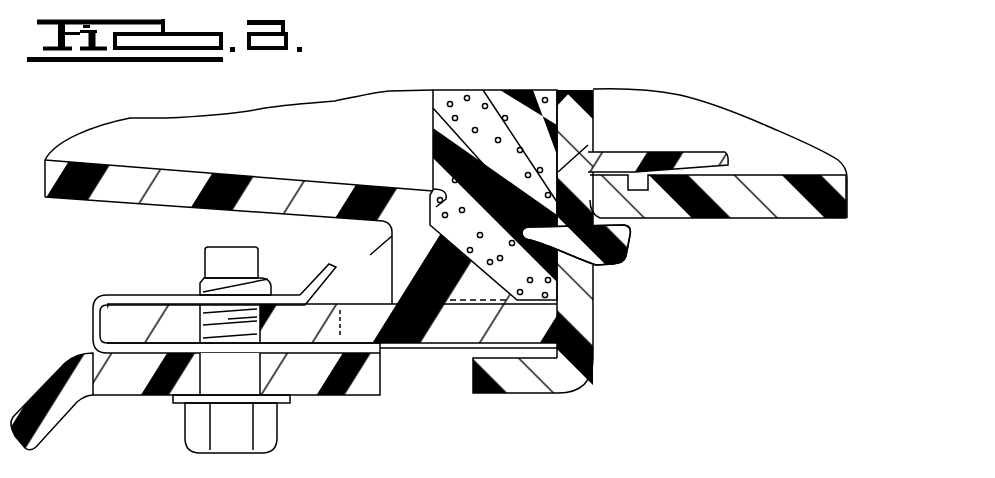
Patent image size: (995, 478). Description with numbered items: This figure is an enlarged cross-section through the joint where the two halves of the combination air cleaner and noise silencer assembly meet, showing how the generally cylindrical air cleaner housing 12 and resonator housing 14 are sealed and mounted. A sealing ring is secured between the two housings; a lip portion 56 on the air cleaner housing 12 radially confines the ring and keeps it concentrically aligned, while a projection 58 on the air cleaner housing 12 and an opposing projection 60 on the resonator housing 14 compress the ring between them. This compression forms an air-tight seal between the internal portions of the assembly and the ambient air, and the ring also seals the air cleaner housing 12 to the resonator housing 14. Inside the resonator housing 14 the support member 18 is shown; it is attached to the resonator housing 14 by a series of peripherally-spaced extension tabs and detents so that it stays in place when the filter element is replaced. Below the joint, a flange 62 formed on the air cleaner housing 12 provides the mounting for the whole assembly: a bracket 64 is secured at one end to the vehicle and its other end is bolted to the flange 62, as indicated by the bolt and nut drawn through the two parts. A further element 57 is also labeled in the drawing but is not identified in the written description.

The air cleaner housing 12 is at (100, 200).
The resonator housing 14 is at (778, 209).
The support member 18 is at (580, 214).
The lip portion 56 is at (447, 350).
The sealing strip 57 is at (433, 128).
The projection 58 is at (433, 197).
The projection 60 is at (535, 239).
The flange 62 is at (134, 317).
The bracket 64 is at (62, 422).